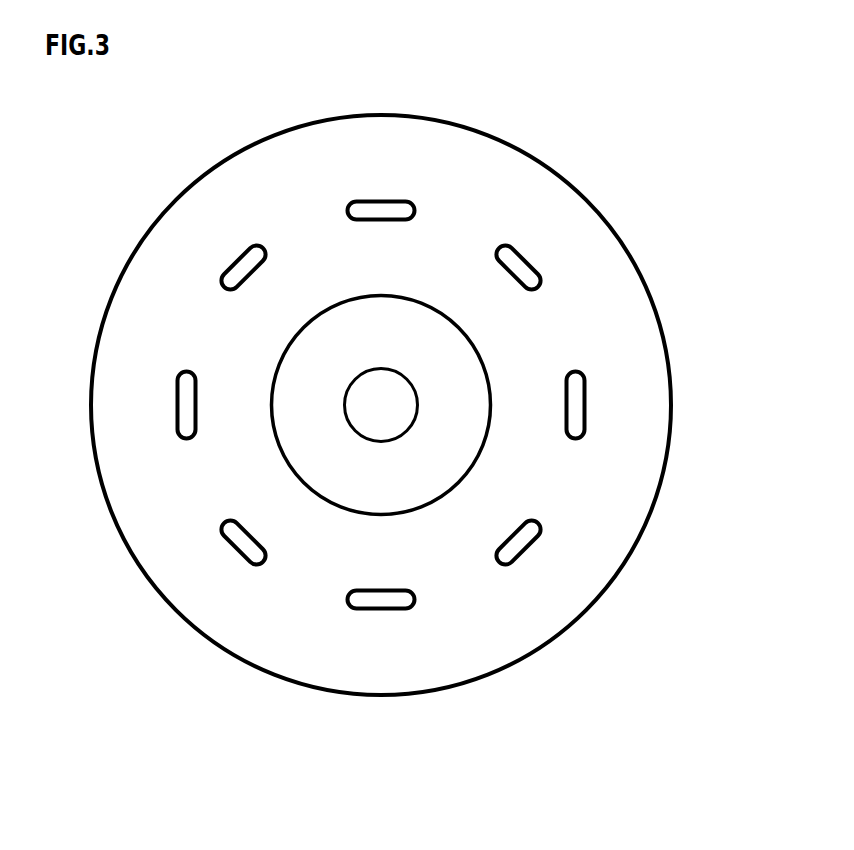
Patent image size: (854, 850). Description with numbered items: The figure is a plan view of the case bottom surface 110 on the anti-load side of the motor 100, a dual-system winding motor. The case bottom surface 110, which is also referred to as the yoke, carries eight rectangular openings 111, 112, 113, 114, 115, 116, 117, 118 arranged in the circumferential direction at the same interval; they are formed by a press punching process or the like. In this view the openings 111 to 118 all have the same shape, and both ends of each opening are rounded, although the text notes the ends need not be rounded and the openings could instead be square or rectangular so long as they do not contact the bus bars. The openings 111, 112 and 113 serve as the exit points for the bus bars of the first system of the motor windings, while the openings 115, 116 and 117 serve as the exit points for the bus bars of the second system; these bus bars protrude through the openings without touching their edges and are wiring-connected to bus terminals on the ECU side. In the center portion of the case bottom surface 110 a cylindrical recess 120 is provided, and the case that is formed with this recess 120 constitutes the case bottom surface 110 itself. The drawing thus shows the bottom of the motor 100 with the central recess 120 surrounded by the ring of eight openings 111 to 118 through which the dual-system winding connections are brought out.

The motor 100 is at (553, 143).
The case bottom surface 110 is at (478, 132).
The opening 111 is at (243, 252).
The opening 112 is at (178, 373).
The opening 113 is at (240, 558).
The opening 114 is at (383, 612).
The opening 115 is at (517, 560).
The opening 116 is at (585, 372).
The opening 117 is at (518, 250).
The opening 118 is at (382, 201).
The cylindrical recess 120 is at (357, 333).